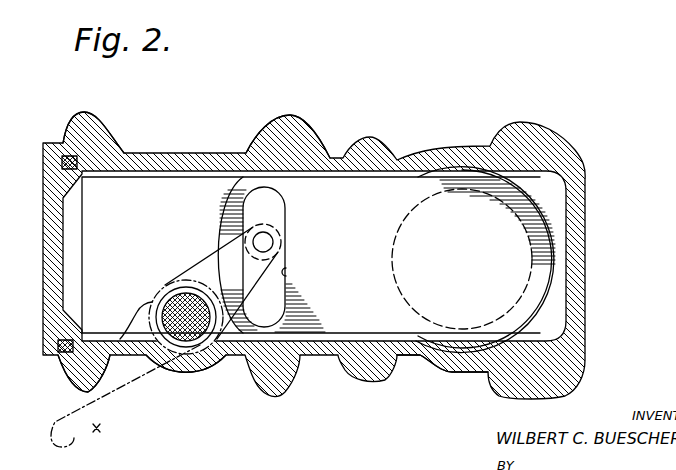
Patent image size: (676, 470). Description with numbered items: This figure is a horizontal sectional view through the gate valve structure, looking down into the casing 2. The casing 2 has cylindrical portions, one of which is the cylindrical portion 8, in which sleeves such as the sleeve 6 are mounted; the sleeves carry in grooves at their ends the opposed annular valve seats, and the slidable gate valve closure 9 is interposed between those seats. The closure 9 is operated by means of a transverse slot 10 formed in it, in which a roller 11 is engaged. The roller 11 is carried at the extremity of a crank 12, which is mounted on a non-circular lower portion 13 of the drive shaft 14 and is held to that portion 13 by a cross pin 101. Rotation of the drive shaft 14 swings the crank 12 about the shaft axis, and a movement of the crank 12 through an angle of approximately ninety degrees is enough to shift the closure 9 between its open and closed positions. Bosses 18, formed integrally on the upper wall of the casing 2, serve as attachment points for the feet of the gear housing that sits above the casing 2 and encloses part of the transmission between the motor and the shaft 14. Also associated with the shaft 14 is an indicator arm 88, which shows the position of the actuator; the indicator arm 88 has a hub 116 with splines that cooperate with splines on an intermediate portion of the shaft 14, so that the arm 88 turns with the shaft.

The casing 2 is at (196, 163).
The sleeve 6 is at (552, 267).
The cylindrical portion 8 is at (450, 373).
The gate valve closure 9 is at (385, 185).
The transverse slot 10 is at (288, 273).
The roller 11 is at (278, 230).
The crank 12 is at (210, 265).
The non-circular lower portion 13 is at (174, 291).
The drive shaft 14 is at (193, 345).
The bosses 18 is at (300, 128).
The indicator arm 88 is at (97, 430).
The cross pin 101 is at (202, 352).
The hub 116 is at (148, 308).